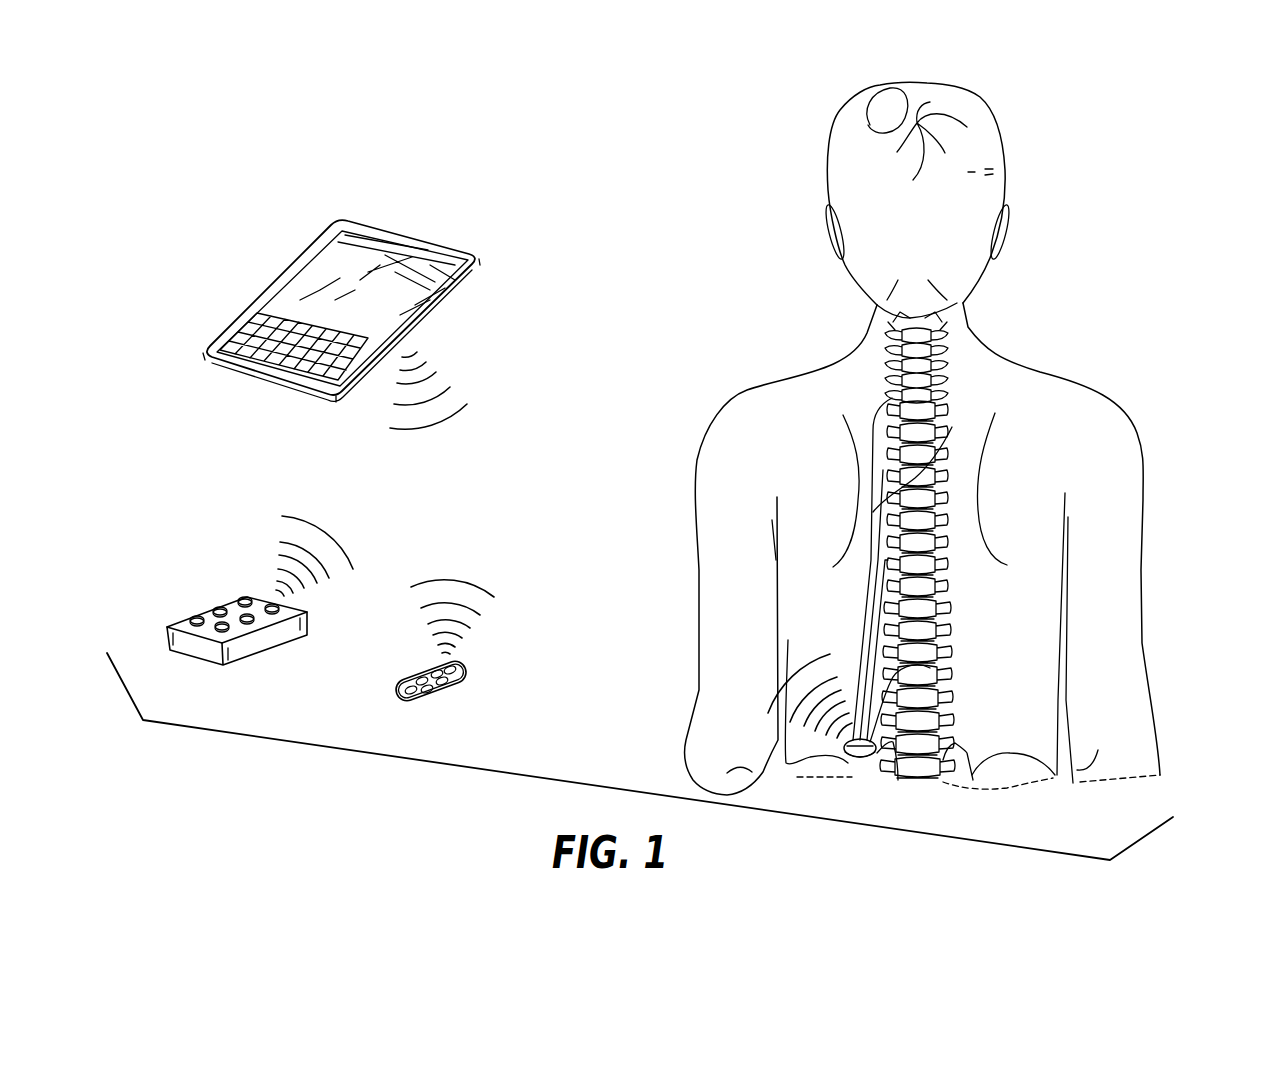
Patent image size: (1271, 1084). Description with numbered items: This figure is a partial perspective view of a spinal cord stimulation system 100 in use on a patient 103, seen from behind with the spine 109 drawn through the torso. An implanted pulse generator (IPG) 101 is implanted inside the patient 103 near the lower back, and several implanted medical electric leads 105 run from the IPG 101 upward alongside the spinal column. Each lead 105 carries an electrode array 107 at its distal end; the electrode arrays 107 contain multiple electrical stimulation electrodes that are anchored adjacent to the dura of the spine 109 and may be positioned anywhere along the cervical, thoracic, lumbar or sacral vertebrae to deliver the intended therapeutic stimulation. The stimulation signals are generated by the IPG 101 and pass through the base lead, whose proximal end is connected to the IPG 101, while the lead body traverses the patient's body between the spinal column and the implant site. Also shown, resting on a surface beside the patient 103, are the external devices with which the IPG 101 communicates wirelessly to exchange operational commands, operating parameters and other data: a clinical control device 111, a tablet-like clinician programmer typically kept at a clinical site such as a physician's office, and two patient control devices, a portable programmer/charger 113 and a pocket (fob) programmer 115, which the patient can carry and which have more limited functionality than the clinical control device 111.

The spinal cord stimulation system 100 is at (367, 753).
The implanted pulse generator 101 is at (844, 758).
The patient 103 is at (1145, 463).
The implanted medical electric leads 105 is at (880, 518).
The electrode arrays 107 is at (952, 427).
The spine 109 is at (930, 315).
The clinical control device 111 is at (422, 240).
The portable programmer/charger 113 is at (262, 643).
The pocket (fob) programmer 115 is at (463, 682).